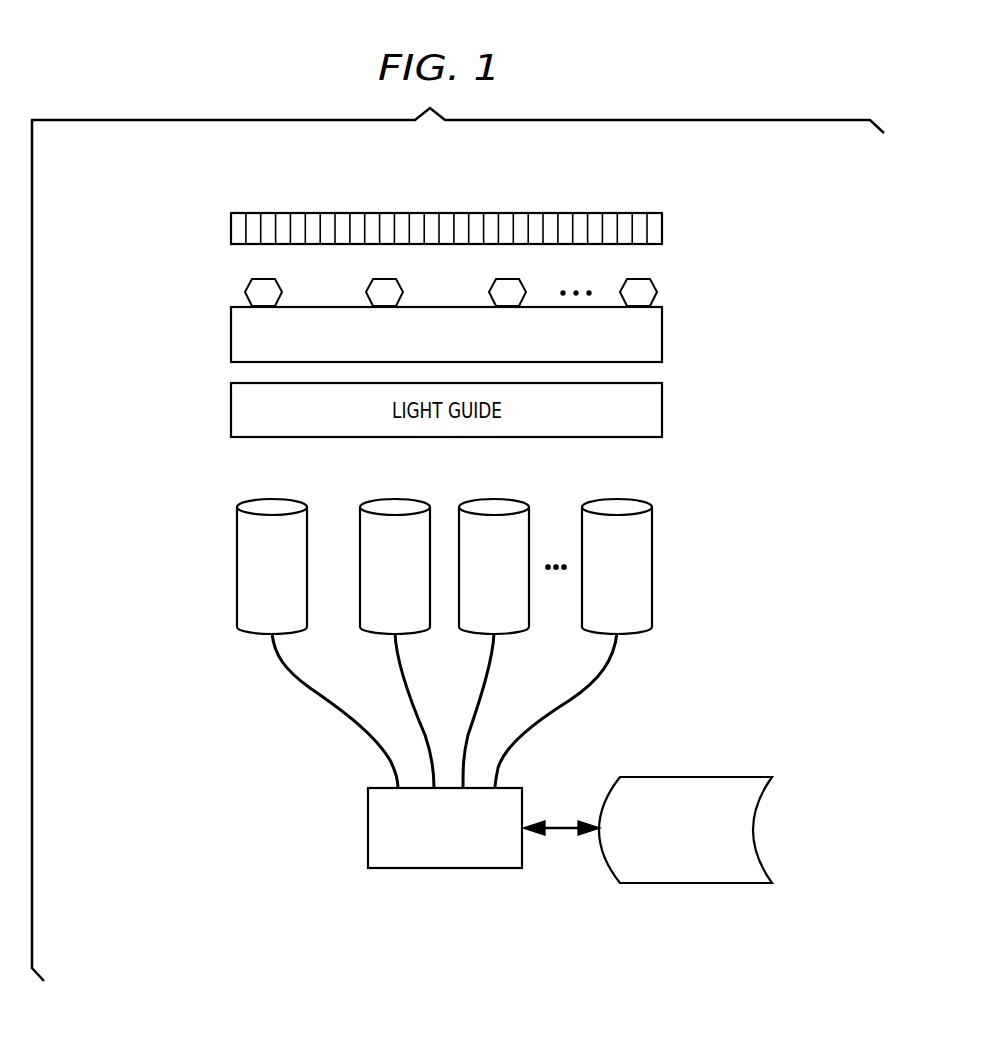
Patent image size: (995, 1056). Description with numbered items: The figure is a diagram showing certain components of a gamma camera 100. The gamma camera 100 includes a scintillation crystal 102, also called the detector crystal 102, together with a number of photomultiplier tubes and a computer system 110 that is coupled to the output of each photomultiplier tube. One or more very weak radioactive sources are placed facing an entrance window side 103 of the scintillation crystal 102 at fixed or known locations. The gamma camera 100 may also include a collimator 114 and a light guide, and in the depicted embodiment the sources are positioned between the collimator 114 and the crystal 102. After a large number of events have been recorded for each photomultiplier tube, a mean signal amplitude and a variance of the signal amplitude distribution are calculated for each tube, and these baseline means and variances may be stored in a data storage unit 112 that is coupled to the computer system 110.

The gamma camera 100 is at (145, 228).
The scintillation crystal 102 is at (242, 336).
The entrance window side 103 is at (238, 306).
The computer system 110 is at (408, 868).
The data storage unit 112 is at (708, 776).
The collimator 114 is at (360, 212).